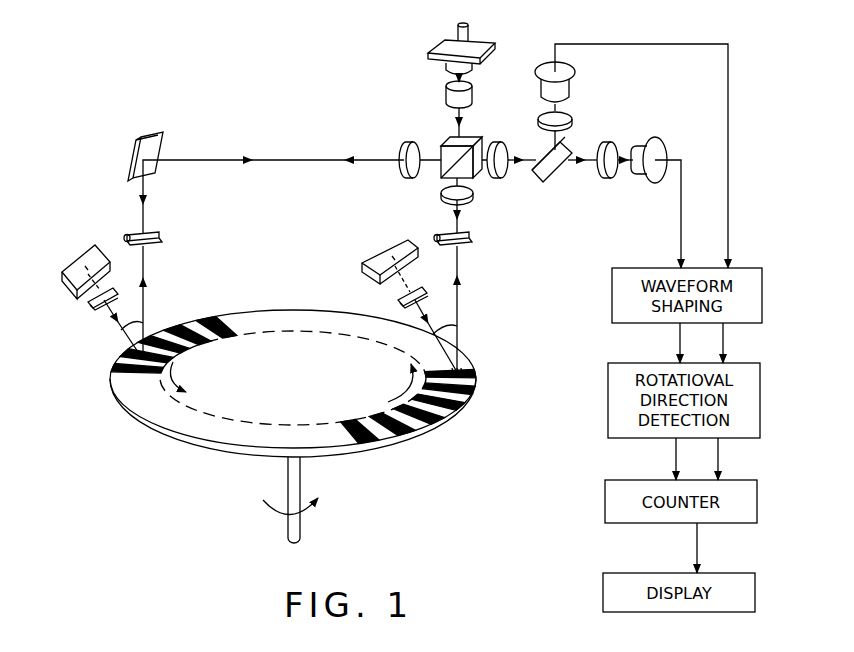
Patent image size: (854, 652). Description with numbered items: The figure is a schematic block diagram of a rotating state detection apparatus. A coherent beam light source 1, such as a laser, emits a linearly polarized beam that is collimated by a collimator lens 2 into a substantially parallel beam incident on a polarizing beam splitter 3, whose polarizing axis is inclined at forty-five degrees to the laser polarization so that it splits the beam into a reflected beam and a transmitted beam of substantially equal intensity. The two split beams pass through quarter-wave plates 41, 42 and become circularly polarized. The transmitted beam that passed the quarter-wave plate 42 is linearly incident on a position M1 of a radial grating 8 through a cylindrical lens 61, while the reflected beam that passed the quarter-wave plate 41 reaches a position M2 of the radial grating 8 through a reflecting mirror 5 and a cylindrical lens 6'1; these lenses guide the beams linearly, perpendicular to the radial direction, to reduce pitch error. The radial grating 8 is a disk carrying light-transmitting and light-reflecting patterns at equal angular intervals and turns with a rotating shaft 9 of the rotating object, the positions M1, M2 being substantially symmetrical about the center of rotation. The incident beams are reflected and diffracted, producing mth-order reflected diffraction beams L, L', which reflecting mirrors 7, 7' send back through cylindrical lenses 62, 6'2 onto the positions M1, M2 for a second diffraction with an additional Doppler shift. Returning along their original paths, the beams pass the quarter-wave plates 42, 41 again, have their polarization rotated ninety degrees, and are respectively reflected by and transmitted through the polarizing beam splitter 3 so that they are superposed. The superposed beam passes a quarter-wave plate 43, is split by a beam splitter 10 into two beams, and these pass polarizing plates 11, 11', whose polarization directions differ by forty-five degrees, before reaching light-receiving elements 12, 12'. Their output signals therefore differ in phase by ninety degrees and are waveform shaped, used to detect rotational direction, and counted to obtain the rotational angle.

The coherent beam light source 1 is at (431, 49).
The collimator lens 2 is at (447, 95).
The polarizing beam splitter 3 is at (442, 146).
The λ/4 plate 41 is at (404, 150).
The λ/4 plate 42 is at (472, 200).
The λ/4 plate 43 is at (505, 172).
The reflecting mirror 5 is at (166, 134).
The cylindrical lens 61 is at (468, 242).
The cylindrical lens 6'1 is at (170, 234).
The cylindrical lens 62 is at (398, 298).
The cylindrical lens 6'2 is at (79, 305).
The reflecting mirror 7 is at (374, 254).
The reflecting mirror 7' is at (73, 260).
The radial grating 8 is at (424, 436).
The rotating shaft 9 is at (303, 483).
The beam splitter 10 is at (553, 180).
The polarizing plate 11 is at (582, 111).
The polarizing plate 11' is at (621, 184).
The light-receiving element 12 is at (580, 81).
The light-receiving element 12' is at (666, 145).
The reflected diffraction beam L is at (391, 355).
The reflected diffraction beam L' is at (93, 347).
The position M1 is at (462, 376).
The position M2 is at (115, 360).